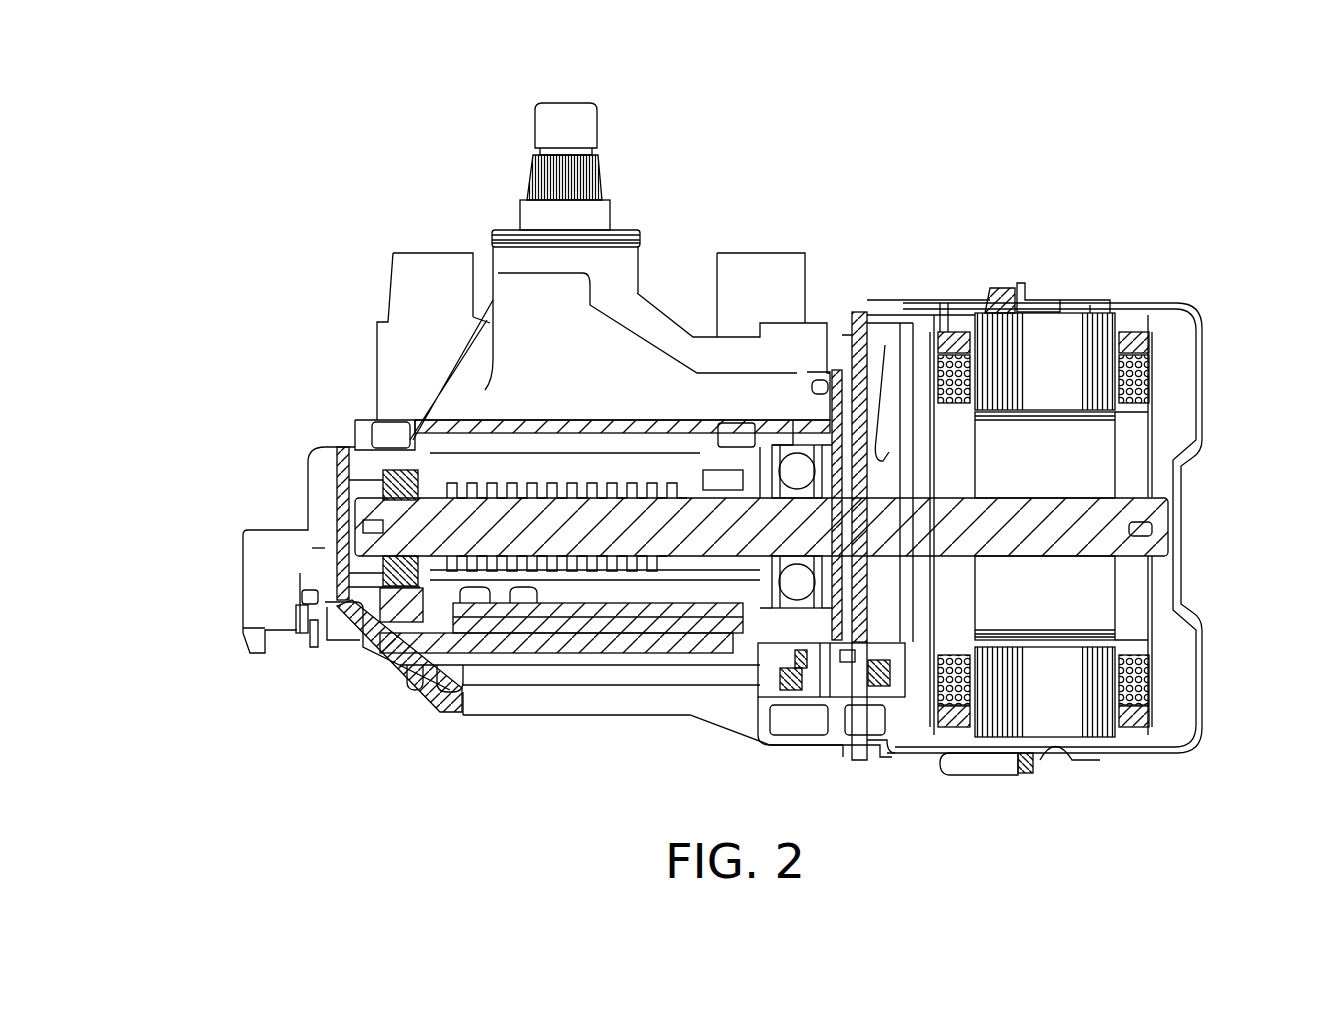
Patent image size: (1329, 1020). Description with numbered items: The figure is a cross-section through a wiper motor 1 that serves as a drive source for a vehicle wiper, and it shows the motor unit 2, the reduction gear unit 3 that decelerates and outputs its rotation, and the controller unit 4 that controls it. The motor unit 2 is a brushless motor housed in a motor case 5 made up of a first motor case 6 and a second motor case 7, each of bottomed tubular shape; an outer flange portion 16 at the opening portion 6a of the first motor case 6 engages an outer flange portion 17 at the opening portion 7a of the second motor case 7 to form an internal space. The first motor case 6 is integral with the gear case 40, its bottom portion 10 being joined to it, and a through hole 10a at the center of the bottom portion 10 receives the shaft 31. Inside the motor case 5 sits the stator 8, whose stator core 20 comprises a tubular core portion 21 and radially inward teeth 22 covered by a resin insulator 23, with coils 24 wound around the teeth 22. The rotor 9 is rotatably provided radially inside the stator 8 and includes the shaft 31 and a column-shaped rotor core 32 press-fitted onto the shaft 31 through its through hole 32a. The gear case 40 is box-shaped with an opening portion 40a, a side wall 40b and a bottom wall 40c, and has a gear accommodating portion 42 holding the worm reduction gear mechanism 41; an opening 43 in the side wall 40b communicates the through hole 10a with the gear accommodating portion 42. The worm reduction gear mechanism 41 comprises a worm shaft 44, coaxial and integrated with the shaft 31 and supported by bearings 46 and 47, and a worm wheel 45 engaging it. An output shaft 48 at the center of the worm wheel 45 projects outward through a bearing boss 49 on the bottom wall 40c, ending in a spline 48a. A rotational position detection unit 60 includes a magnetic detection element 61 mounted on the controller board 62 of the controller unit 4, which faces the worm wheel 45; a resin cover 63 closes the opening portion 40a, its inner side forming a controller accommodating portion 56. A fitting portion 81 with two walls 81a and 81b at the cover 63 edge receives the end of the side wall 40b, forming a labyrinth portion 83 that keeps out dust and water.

The wiper motor 1 is at (1126, 130).
The motor unit 2 is at (1114, 260).
The reduction gear unit 3 is at (459, 394).
The controller unit 4 is at (690, 670).
The motor case 5 is at (937, 160).
The first motor case 6 is at (941, 302).
The opening portion 6a is at (1033, 774).
The second motor case 7 is at (1090, 305).
The opening portion 7a is at (1058, 755).
The stator 8 is at (1134, 322).
The rotor 9 is at (1158, 437).
The bottom portion 10 is at (848, 335).
The through hole 10a is at (885, 345).
The outer flange portion 16 is at (990, 288).
The outer flange portion 17 is at (1027, 284).
The stator core 20 is at (1262, 232).
The core portion 21 is at (1105, 302).
The teeth 22 is at (1115, 372).
The insulator 23 is at (1140, 410).
The coils 24 is at (1150, 380).
The shaft 31 is at (1150, 548).
The rotor core 32 is at (1100, 472).
The through hole 32a is at (1153, 536).
The gear case 40 is at (333, 523).
The opening portion 40a is at (340, 625).
The side wall 40b is at (858, 745).
The bottom wall 40c is at (618, 420).
The worm reduction gear mechanism 41 is at (467, 205).
The gear accommodating portion 42 is at (480, 436).
The opening 43 is at (834, 385).
The worm shaft 44 is at (600, 495).
The worm wheel 45 is at (540, 490).
The bearing 46 is at (797, 445).
The bearing 47 is at (383, 486).
The output shaft 48 is at (607, 128).
The spline 48a is at (600, 176).
The bearing boss 49 is at (640, 262).
The controller accommodating portion 56 is at (455, 692).
The rotational position detection unit 60 is at (598, 698).
The magnetic detection element 61 is at (565, 633).
The controller board 62 is at (540, 603).
The cover 63 is at (600, 690).
The fitting portion 81 is at (224, 596).
The wall 81a is at (300, 617).
The wall 81b is at (310, 597).
The labyrinth portion 83 is at (312, 640).